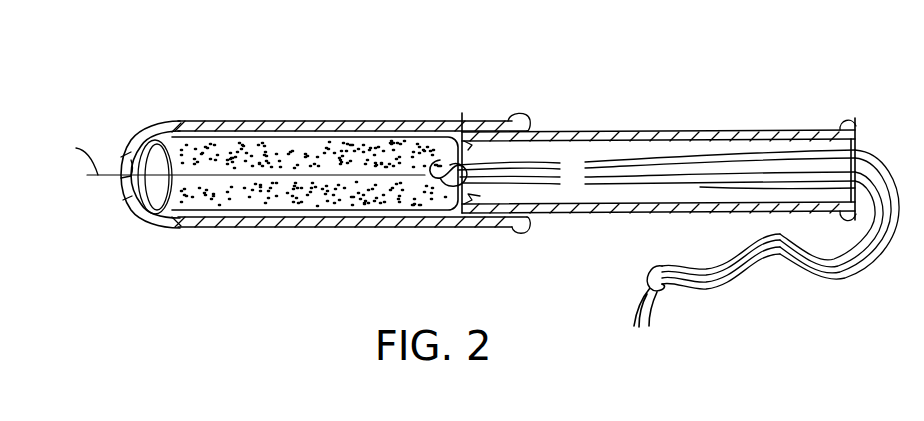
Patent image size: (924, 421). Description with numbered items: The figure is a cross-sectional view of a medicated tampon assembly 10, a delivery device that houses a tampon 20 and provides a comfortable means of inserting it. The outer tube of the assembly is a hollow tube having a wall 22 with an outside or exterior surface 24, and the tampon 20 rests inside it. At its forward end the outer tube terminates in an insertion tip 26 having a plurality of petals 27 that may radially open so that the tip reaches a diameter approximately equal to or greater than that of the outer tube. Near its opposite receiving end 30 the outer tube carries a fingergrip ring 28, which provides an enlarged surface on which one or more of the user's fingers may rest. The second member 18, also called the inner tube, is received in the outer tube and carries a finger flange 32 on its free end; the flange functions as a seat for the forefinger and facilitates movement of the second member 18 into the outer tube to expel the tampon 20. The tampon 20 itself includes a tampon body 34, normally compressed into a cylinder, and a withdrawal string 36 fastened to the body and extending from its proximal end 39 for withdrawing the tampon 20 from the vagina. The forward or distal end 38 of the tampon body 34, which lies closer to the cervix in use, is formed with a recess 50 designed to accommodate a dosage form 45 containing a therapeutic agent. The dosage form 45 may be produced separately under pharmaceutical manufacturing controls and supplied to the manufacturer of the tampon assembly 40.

The medicated tampon assembly 10 is at (374, 57).
The second member 18 is at (679, 152).
The tampon 20 is at (332, 188).
The wall 22 is at (318, 161).
The exterior surface 24 is at (393, 121).
The insertion tip 26 is at (125, 186).
The petals 27 is at (122, 190).
The fingergrip ring 28 is at (518, 112).
The receiving end 30 is at (528, 119).
The finger flange 32 is at (853, 120).
The tampon body 34 is at (260, 228).
The withdrawal string 36 is at (800, 275).
The distal end 38 is at (166, 137).
The proximal end 39 is at (462, 113).
The tampon assembly 40 is at (352, 274).
The dosage form 45 is at (136, 142).
The recess 50 is at (175, 146).